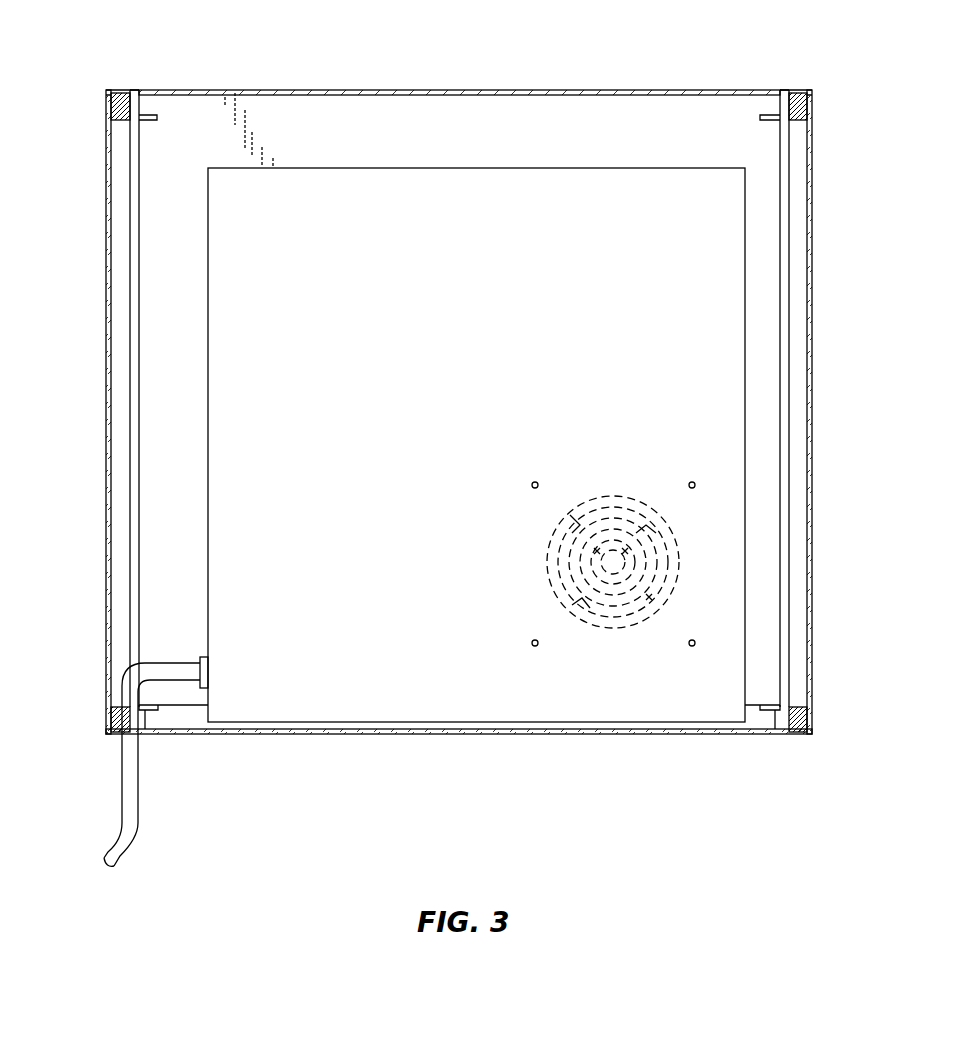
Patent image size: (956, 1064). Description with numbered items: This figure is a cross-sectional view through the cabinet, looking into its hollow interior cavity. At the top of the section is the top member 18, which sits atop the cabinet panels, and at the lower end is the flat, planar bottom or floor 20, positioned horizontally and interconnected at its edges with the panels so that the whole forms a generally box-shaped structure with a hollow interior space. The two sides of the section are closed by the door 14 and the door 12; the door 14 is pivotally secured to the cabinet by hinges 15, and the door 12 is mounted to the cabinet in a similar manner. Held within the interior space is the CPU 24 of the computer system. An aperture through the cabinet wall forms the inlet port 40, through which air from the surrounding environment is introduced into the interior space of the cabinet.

The door 12 is at (812, 362).
The door 14 is at (106, 362).
The hinges 15 is at (130, 235).
The top member 18 is at (527, 89).
The bottom or floor 20 is at (417, 735).
The CPU 24 is at (448, 397).
The inlet port 40 is at (552, 558).